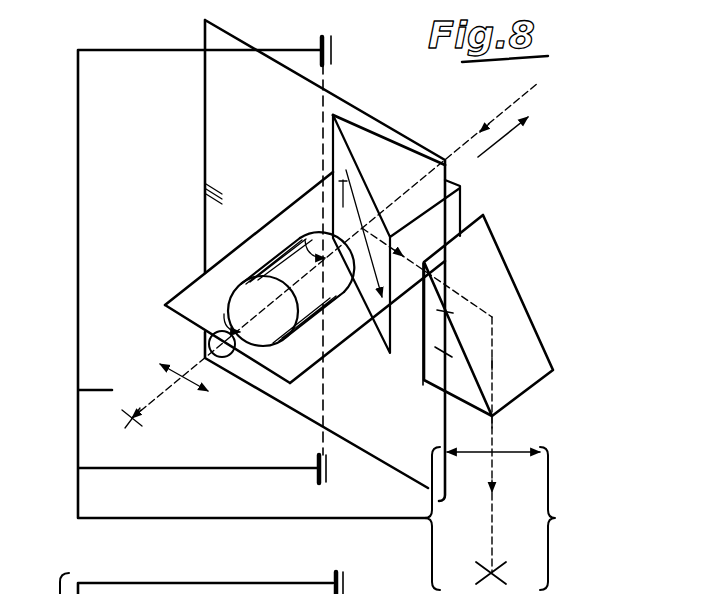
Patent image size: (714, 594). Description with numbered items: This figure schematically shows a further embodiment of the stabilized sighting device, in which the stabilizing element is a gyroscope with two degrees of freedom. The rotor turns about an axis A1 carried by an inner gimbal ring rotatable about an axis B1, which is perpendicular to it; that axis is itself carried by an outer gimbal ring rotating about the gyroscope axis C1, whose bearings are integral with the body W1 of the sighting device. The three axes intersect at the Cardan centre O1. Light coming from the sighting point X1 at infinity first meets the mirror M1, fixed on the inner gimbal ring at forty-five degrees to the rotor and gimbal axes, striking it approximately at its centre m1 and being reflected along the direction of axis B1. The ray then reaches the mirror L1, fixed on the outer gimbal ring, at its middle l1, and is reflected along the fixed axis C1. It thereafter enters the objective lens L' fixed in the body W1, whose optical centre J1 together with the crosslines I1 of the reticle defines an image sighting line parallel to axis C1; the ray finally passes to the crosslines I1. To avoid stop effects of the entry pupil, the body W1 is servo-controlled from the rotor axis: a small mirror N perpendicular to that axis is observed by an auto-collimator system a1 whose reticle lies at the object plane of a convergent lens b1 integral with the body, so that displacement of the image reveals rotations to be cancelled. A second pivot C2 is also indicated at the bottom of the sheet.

The body of the sighting device W1 is at (68, 42).
The gyroscope axis C1 is at (331, 50).
The gimbal ring axis B1 is at (205, 196).
The mirror M1 is at (340, 147).
The centre of the mirror m1 is at (350, 225).
The Cardan centre O1 is at (303, 240).
The rotor axis A1 is at (306, 240).
The small mirror N is at (208, 342).
The auto-collimator system a1 is at (138, 422).
The convergent lens b1 is at (183, 382).
The sighting point X1 is at (335, 250).
The mirror L1 is at (505, 282).
The middle of the mirror l1 is at (492, 317).
The optical centre of the objective lens J1 is at (490, 452).
The crosslines of the reticle I1 is at (494, 558).
The objective lens L' is at (504, 518).
The pivot bearing of second unit C2 is at (343, 583).